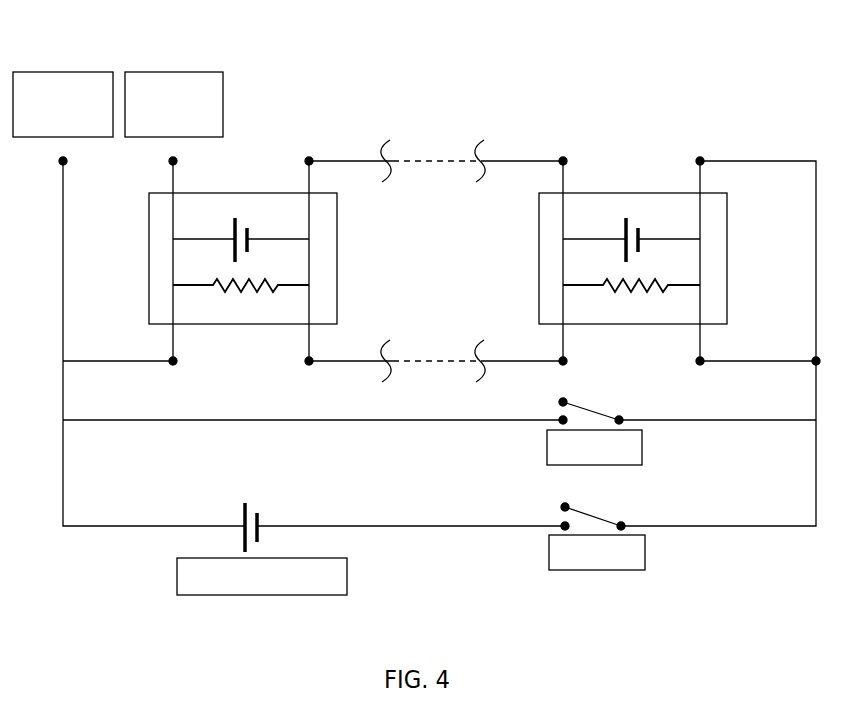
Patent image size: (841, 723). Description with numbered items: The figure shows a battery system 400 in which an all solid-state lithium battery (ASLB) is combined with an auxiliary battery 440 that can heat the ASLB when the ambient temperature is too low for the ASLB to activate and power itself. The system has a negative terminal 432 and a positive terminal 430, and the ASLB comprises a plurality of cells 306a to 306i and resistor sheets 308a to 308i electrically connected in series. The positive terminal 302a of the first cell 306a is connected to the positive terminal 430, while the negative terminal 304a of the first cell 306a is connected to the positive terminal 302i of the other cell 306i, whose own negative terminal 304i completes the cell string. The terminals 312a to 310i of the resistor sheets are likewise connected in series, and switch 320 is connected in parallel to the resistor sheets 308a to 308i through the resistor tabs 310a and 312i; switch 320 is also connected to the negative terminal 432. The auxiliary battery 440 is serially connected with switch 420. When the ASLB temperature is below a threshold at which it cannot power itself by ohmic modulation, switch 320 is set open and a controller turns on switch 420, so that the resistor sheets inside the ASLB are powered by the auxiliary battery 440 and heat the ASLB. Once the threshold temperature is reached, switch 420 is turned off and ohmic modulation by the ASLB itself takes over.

The battery system 400 is at (549, 90).
The negative terminal 432 is at (63, 104).
The positive terminal 430 is at (174, 90).
The positive terminal of first cell 302a is at (148, 169).
The negative terminal of first cell 304a is at (332, 160).
The first cell 306a is at (241, 231).
The resistor sheet 308a is at (241, 299).
The resistor tab 310a is at (177, 374).
The terminal of resistor sheet 312a is at (306, 374).
The positive terminal of another cell 302i is at (552, 161).
The negative terminal of i-th battery cell 304i is at (713, 160).
The cell 306i is at (631, 228).
The resistor sheet 308i is at (631, 295).
The terminal of resistor sheet 310i is at (567, 371).
The resistor tab 312i is at (748, 371).
The switch 320 is at (617, 431).
The switch 420 is at (622, 536).
The auxiliary battery 440 is at (285, 549).